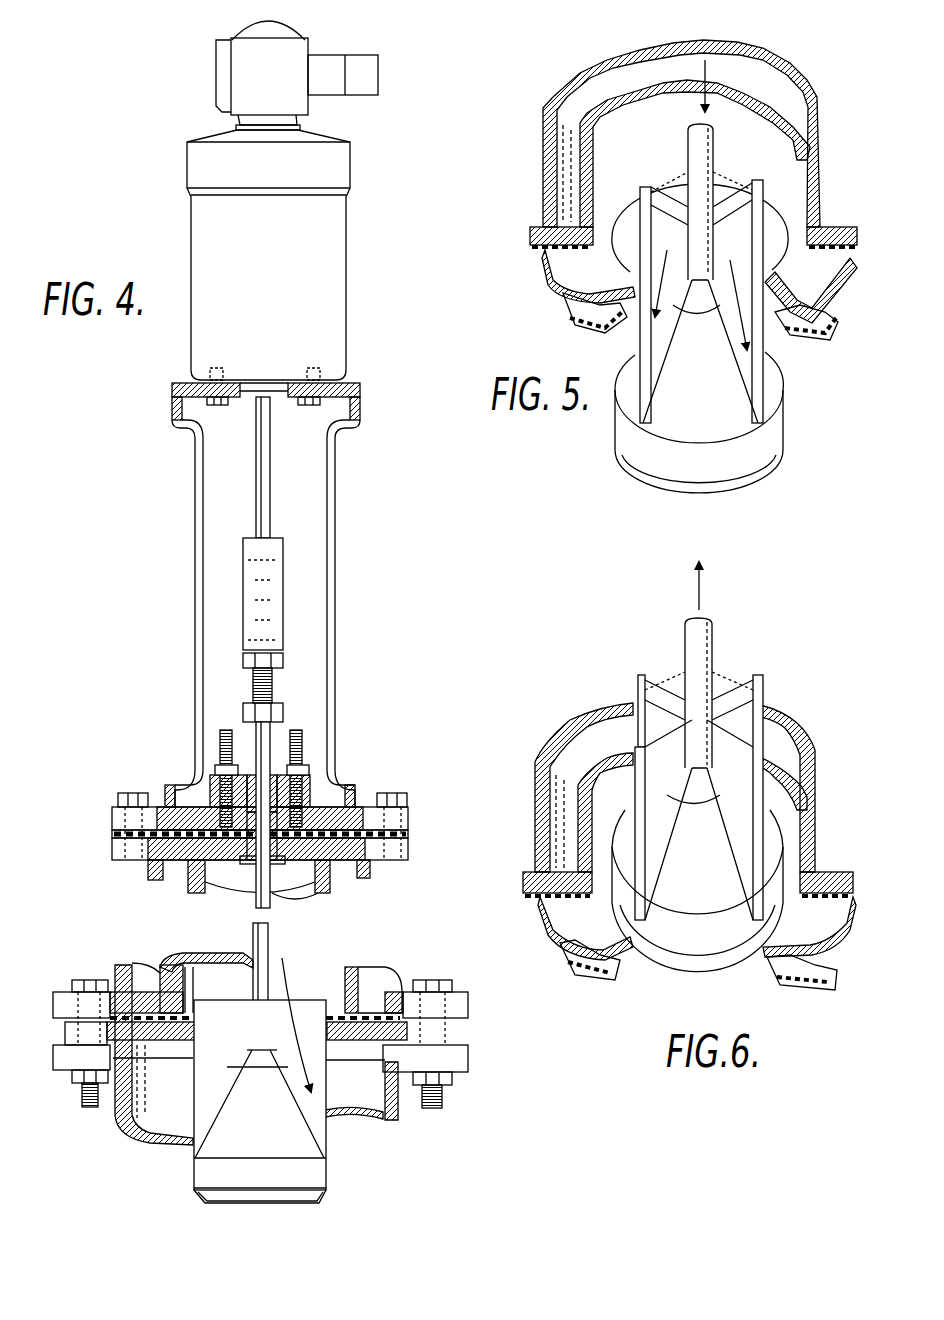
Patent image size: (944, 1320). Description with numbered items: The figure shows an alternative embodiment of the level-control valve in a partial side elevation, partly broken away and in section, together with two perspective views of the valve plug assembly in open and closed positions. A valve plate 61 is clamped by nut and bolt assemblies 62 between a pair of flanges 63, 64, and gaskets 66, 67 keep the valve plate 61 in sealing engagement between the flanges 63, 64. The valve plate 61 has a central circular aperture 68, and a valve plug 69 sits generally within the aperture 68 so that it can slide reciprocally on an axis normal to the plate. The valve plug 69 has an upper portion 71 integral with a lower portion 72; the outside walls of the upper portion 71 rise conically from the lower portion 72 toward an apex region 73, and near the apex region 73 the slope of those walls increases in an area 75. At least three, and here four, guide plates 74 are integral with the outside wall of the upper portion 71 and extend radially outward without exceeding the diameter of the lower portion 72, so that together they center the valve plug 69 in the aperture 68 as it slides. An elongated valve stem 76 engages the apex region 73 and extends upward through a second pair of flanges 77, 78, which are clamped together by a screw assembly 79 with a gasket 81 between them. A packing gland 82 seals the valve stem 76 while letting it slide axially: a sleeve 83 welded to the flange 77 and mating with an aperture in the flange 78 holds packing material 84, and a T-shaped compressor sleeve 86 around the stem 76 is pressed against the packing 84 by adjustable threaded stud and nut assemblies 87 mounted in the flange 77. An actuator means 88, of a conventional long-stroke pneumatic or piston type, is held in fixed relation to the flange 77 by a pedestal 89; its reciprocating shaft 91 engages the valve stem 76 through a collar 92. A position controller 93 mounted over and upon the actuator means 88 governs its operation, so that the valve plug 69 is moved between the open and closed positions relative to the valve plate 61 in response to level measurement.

In FIG. 4, the valve plate 61 is at (445, 1030).
In FIG. 5, the valve plate 61 is at (552, 282).
In FIG. 6, the valve plate 61 is at (598, 930).
In FIG. 4, the nut and bolt assemblies 62 is at (90, 978).
In FIG. 4, the flange 63 is at (462, 1062).
In FIG. 4, the flange 64 is at (462, 1005).
In FIG. 4, the gasket 66 is at (67, 1022).
In FIG. 5, the gasket 66 is at (540, 250).
In FIG. 6, the gasket 66 is at (822, 898).
In FIG. 4, the gasket 67 is at (66, 1038).
In FIG. 5, the gasket 67 is at (580, 323).
In FIG. 6, the gasket 67 is at (790, 990).
In FIG. 4, the circular aperture 68 is at (316, 1025).
In FIG. 5, the circular aperture 68 is at (772, 250).
In FIG. 4, the valve plug 69 is at (306, 1176).
In FIG. 5, the valve plug 69 is at (762, 443).
In FIG. 6, the valve plug 69 is at (728, 952).
In FIG. 4, the upper portion 71 is at (290, 1128).
In FIG. 5, the upper portion 71 is at (687, 390).
In FIG. 6, the upper portion 71 is at (685, 900).
In FIG. 4, the lower portion 72 is at (315, 1189).
In FIG. 5, the lower portion 72 is at (622, 432).
In FIG. 6, the lower portion 72 is at (703, 958).
In FIG. 4, the apex region 73 is at (252, 1038).
In FIG. 4, the guide plates 74 is at (300, 1010).
In FIG. 5, the guide plates 74 is at (640, 250).
In FIG. 6, the guide plates 74 is at (733, 690).
In FIG. 4, the area of increased slope 75 is at (250, 1055).
In FIG. 4, the valve stem 76 is at (258, 745).
In FIG. 5, the valve stem 76 is at (697, 150).
In FIG. 6, the valve stem 76 is at (688, 658).
In FIG. 4, the flange 77 is at (112, 816).
In FIG. 4, the flange 78 is at (112, 852).
In FIG. 4, the screw assembly 79 is at (138, 793).
In FIG. 4, the gasket 81 is at (112, 834).
In FIG. 4, the packing gland 82 is at (280, 820).
In FIG. 4, the sleeve 83 is at (290, 832).
In FIG. 4, the packing material 84 is at (247, 862).
In FIG. 4, the compressor sleeve 86 is at (300, 785).
In FIG. 4, the threaded stud and nut assemblies 87 is at (222, 745).
In FIG. 4, the actuator means 88 is at (205, 262).
In FIG. 4, the pedestal 89 is at (196, 610).
In FIG. 4, the reciprocating shaft 91 is at (262, 485).
In FIG. 4, the collar 92 is at (245, 582).
In FIG. 4, the position controller 93 is at (285, 64).